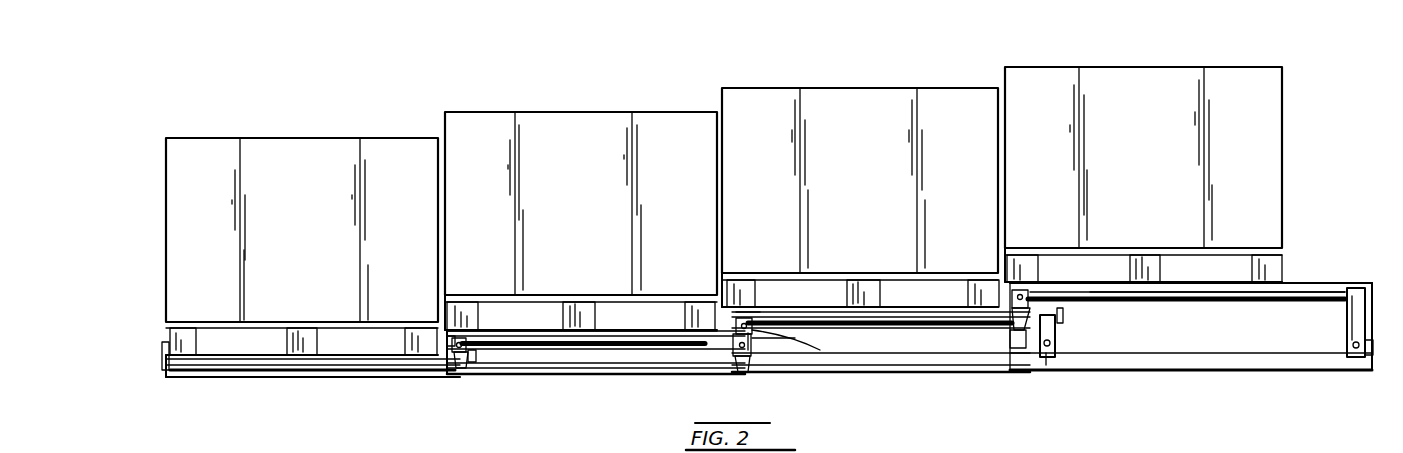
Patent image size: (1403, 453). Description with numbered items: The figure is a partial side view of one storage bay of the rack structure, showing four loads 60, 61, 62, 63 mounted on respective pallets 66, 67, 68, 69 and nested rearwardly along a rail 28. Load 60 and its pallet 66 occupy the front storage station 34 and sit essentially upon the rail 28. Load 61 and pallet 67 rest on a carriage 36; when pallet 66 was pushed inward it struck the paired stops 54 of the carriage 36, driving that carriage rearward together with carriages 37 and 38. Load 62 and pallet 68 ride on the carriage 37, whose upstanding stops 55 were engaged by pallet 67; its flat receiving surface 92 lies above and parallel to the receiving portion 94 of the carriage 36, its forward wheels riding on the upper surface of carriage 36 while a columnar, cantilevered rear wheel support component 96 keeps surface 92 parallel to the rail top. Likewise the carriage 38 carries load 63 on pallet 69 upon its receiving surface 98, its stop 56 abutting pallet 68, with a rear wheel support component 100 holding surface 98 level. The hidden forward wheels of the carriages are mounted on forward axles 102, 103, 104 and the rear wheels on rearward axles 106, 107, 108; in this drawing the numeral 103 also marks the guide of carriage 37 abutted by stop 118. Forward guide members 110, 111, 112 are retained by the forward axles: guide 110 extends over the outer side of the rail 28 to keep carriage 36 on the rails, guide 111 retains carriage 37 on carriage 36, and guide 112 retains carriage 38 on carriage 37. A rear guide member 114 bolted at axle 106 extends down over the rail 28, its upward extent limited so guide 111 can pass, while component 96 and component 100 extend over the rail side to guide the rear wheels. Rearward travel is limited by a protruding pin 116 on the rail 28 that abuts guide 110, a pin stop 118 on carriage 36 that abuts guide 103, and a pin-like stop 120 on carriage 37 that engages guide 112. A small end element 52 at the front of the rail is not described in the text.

The rail 28 is at (1192, 358).
The front storage station 34 is at (302, 375).
The carriage 36 is at (568, 362).
The carriage 37 is at (880, 340).
The carriage 38 is at (1166, 300).
The end stop bracket 52 is at (162, 346).
The paired stops 54 is at (447, 308).
The paired upstanding stops 55 is at (724, 285).
The stop 56 is at (1007, 258).
The load 60 is at (312, 152).
The load 61 is at (588, 127).
The load 62 is at (873, 103).
The load 63 is at (1134, 90).
The pallet 66 is at (306, 340).
The pallet 67 is at (575, 316).
The pallet 68 is at (867, 290).
The pallet 69 is at (1141, 258).
The receiving portion or surface 92 is at (905, 308).
The receiving portion 94 is at (617, 335).
The rear wheel support component 96 is at (1060, 340).
The receiving portion or surface 98 is at (1303, 280).
The rear wheel support component 100 is at (1347, 323).
The forward axle 102 is at (456, 356).
The guide 103 is at (745, 318).
The forward axle 104 is at (1018, 303).
The rearward axle 106 is at (733, 362).
The rearward axle 107 is at (1050, 360).
The rearward axle 108 is at (1355, 358).
The forward guide member 110 is at (462, 358).
The forward guide member 111 is at (775, 337).
The forward guide member 112 is at (1012, 345).
The rear guide member 114 is at (748, 348).
The protruding pin 116 is at (476, 360).
The pin stop 118 is at (762, 336).
The pin-like stop 120 is at (1064, 314).